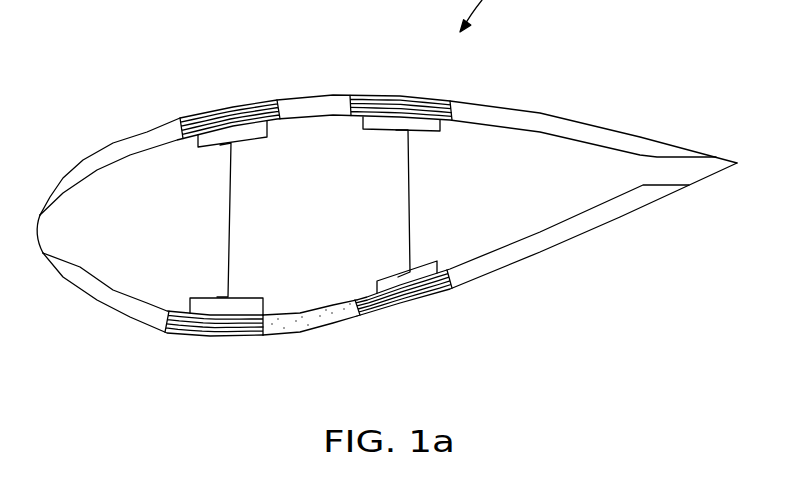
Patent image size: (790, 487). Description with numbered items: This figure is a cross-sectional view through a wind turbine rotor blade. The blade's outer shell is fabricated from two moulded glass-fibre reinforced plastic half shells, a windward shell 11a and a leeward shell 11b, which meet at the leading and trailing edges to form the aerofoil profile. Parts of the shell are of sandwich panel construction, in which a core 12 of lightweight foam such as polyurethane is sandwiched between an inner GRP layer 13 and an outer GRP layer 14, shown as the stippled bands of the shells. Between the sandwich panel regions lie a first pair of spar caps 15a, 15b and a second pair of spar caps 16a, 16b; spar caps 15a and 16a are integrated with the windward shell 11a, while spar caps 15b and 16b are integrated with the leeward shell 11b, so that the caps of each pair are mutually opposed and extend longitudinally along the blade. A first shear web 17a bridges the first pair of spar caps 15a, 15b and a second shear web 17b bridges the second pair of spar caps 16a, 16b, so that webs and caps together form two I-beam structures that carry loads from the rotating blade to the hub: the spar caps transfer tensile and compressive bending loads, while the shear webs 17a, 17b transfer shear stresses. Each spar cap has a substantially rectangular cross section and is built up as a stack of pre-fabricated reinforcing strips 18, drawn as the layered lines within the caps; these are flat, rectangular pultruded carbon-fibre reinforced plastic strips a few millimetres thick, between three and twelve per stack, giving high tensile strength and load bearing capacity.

The windward shell 11a is at (580, 242).
The leeward shell 11b is at (533, 108).
The core 12 is at (287, 322).
The inner GRP layer 13 is at (313, 308).
The outer GRP layer 14 is at (335, 323).
The first-pair spar cap 15a is at (220, 337).
The first-pair spar cap 15b is at (217, 108).
The second-pair spar cap 16a is at (410, 301).
The second-pair spar cap 16b is at (387, 95).
The first shear web 17a is at (210, 215).
The second shear web 17b is at (418, 194).
The reinforcing strips 18 is at (417, 107).